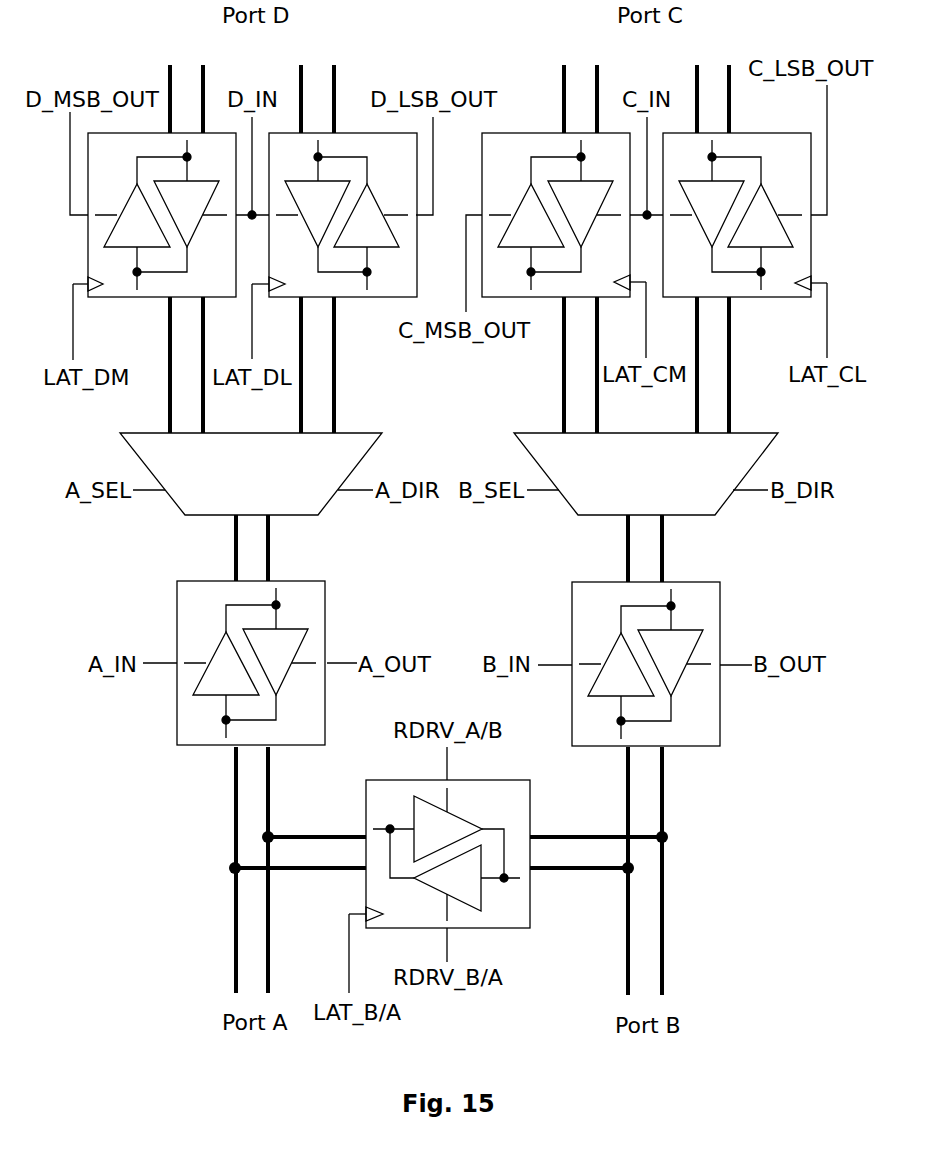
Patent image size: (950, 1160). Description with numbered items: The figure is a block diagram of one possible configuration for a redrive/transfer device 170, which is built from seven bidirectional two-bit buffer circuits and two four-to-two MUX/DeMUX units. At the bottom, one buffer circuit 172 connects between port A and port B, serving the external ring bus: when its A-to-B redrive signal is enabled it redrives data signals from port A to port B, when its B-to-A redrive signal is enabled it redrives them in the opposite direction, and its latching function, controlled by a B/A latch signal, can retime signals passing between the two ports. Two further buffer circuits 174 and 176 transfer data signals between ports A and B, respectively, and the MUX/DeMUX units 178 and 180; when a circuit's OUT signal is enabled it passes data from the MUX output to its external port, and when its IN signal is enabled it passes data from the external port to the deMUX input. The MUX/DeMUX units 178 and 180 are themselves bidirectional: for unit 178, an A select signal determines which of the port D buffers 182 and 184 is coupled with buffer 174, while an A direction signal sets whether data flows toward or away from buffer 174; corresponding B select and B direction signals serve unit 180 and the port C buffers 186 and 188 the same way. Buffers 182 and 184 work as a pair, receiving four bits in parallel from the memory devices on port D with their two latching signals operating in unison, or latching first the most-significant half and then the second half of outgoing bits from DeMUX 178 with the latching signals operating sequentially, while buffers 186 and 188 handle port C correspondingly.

The redrive/transfer device 170 is at (103, 853).
The buffer circuit 172 is at (532, 812).
The buffer circuit 174 is at (327, 615).
The buffer circuit 176 is at (720, 617).
The MUX/DeMUX unit 178 is at (237, 499).
The MUX/DeMUX unit 180 is at (632, 499).
The buffer circuit 182 is at (148, 298).
The buffer circuit 184 is at (350, 300).
The buffer circuit 186 is at (550, 300).
The buffer circuit 188 is at (742, 133).